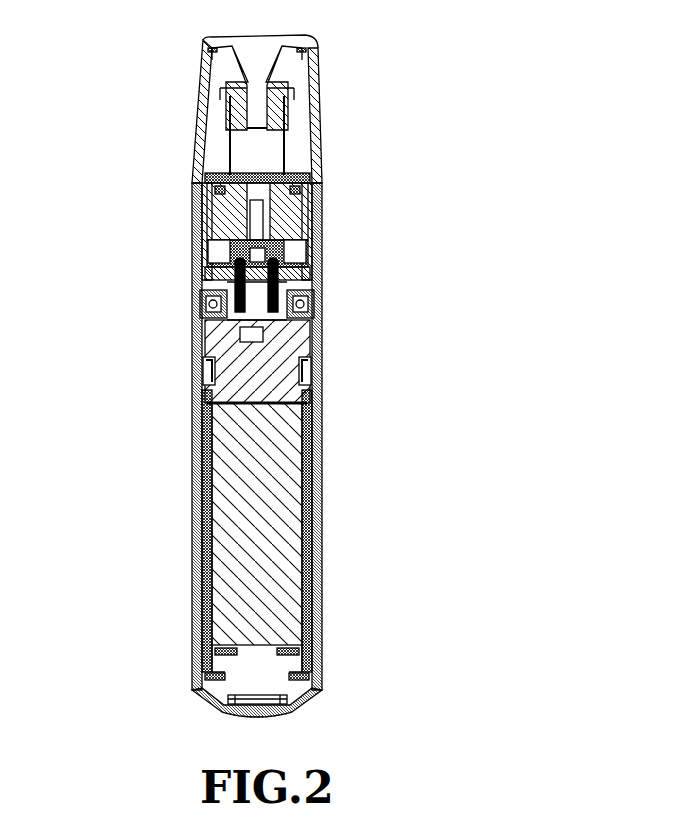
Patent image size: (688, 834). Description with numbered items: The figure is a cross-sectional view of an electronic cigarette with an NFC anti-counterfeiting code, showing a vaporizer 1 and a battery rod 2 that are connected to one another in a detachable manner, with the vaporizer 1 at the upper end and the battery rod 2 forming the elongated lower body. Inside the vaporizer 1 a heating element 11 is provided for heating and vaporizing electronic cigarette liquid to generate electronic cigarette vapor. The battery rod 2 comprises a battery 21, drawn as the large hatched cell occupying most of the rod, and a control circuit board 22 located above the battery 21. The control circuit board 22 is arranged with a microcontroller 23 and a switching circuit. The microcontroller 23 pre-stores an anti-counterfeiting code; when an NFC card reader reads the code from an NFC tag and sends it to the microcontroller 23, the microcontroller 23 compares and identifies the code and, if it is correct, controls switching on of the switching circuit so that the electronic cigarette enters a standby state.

The vaporizer 1 is at (210, 136).
The heating element 11 is at (257, 178).
The battery rod 2 is at (199, 496).
The battery 21 is at (276, 536).
The control circuit board 22 is at (290, 341).
The microcontroller 23 is at (248, 333).